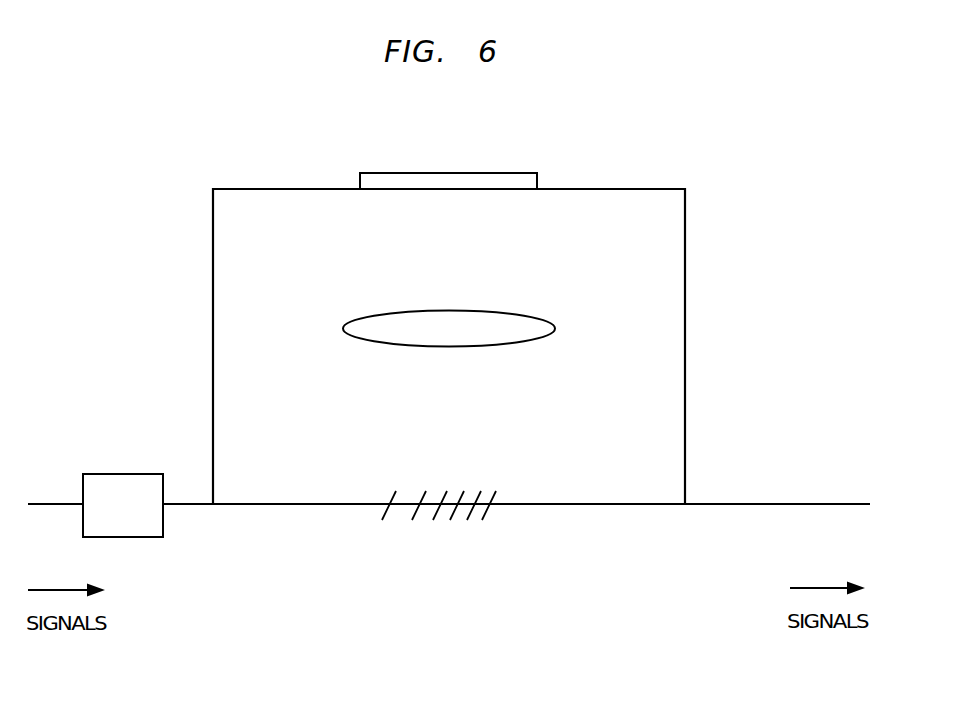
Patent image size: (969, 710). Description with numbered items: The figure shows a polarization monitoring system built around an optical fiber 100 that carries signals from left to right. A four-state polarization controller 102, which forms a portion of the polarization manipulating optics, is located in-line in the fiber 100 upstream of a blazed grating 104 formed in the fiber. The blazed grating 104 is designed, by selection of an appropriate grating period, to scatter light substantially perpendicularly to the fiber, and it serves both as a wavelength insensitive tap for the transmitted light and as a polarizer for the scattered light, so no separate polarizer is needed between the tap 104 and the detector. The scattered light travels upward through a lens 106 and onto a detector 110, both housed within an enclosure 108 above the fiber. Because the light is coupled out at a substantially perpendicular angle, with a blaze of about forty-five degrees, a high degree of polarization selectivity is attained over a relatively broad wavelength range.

The fiber 100 is at (301, 506).
The four-state polarization controller 102 is at (92, 538).
The blazed grating 104 is at (452, 518).
The lens 106 is at (386, 345).
The housing 108 is at (686, 296).
The detector 110 is at (360, 176).